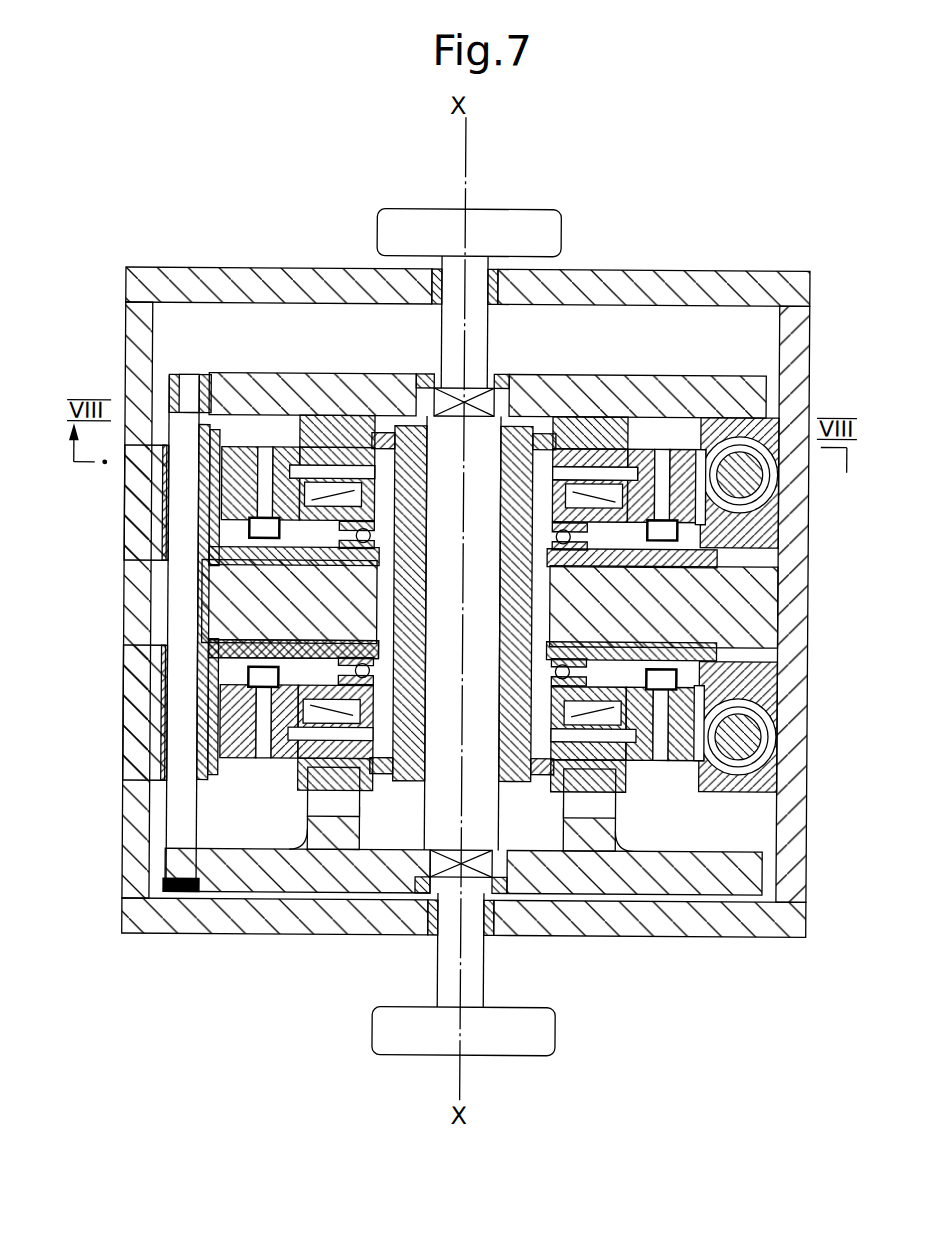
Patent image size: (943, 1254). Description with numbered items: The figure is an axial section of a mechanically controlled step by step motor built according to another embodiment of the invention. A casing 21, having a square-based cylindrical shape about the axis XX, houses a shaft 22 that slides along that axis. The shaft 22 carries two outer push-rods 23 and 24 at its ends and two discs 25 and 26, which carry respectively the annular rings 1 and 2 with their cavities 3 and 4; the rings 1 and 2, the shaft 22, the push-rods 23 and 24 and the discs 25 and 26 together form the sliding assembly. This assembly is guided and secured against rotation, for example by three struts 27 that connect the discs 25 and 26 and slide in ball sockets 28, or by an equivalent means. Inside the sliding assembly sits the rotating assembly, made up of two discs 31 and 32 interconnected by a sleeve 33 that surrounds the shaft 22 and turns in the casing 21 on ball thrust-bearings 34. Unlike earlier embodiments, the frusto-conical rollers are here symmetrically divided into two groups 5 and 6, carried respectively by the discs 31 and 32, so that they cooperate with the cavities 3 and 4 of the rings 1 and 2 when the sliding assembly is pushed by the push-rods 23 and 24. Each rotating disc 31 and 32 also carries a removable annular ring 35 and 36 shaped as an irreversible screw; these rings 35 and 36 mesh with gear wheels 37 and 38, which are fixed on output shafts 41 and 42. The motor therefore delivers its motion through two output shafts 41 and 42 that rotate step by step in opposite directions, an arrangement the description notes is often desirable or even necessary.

The annular ring 1 is at (244, 880).
The annular ring 2 is at (333, 431).
The cavity 3 is at (338, 790).
The cavity 4 is at (269, 497).
The frusto-conical rollers 5 is at (306, 761).
The frusto-conical rollers 6 is at (328, 429).
The casing 21 is at (155, 260).
The shaft 22 is at (475, 598).
The outer push-rod 23 is at (399, 1039).
The outer push-rod 24 is at (522, 226).
The disc 25 is at (570, 875).
The disc 26 is at (268, 389).
The strut 27 is at (184, 616).
The ball socket 28 is at (166, 482).
The disc 31 is at (311, 685).
The disc 32 is at (263, 519).
The sleeve 33 is at (410, 579).
The ball thrust-bearing 34 is at (602, 628).
The removable annular ring 35 is at (685, 770).
The removable annular ring 36 is at (687, 430).
The gear wheel 37 is at (774, 736).
The gear wheel 38 is at (771, 499).
The output shaft 41 is at (767, 708).
The output shaft 42 is at (736, 516).